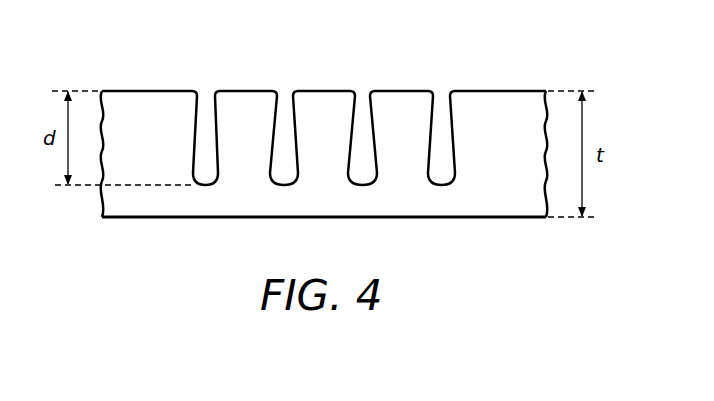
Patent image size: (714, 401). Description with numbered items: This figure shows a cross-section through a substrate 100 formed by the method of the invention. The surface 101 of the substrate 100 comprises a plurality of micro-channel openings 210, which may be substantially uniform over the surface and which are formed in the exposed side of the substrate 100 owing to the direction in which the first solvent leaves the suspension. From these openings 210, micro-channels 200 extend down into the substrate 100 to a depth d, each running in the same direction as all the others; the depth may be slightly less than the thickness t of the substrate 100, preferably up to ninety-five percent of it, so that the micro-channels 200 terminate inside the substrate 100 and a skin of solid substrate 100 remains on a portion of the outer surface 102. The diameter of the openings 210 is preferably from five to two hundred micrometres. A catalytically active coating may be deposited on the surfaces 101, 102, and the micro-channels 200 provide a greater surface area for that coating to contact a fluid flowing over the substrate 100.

The substrate 100 is at (327, 150).
The surface 101 is at (324, 101).
The outer surface 102 is at (487, 219).
The micro-channels 200 is at (324, 101).
The micro-channel openings 210 is at (284, 97).